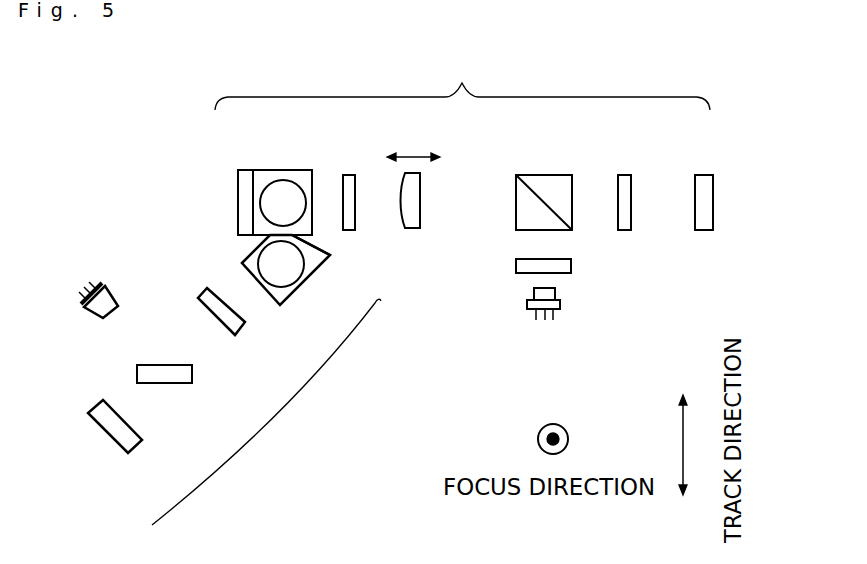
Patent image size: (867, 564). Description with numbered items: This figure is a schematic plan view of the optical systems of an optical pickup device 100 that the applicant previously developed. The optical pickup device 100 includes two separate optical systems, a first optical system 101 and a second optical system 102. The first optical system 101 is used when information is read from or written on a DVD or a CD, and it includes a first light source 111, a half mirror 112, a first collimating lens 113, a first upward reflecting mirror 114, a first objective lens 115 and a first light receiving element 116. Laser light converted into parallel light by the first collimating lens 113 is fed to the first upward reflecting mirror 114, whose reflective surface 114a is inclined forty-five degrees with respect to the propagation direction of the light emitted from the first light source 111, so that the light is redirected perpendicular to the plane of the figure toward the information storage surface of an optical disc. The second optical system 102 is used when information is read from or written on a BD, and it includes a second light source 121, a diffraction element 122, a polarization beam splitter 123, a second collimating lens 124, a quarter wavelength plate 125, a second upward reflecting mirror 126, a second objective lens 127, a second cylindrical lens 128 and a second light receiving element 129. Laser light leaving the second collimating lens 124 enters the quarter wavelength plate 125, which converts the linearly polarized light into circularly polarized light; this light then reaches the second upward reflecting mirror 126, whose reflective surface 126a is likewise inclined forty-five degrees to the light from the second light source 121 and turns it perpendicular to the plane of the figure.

The optical pickup device 100 is at (72, 160).
The first optical system 101 is at (266, 412).
The second optical system 102 is at (462, 83).
The first light source 111 is at (108, 288).
The half mirror 112 is at (148, 383).
The first collimating lens 113 is at (208, 289).
The first upward reflecting mirror 114 is at (280, 303).
The reflective surface 114a is at (307, 266).
The first objective lens 115 is at (287, 275).
The first light receiving element 116 is at (103, 400).
The second light source 121 is at (527, 311).
The diffraction element 122 is at (571, 272).
The polarization beam splitter 123 is at (543, 174).
The second collimating lens 124 is at (413, 228).
The quarter wavelength plate 125 is at (345, 175).
The second upward reflecting mirror 126 is at (238, 177).
The reflective surface 126a is at (265, 178).
The second objective lens 127 is at (283, 192).
The second cylindrical lens 128 is at (625, 174).
The second light receiving element 129 is at (707, 231).